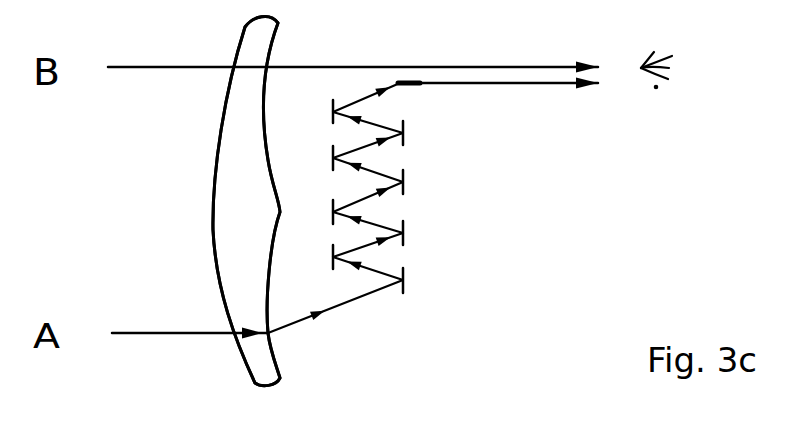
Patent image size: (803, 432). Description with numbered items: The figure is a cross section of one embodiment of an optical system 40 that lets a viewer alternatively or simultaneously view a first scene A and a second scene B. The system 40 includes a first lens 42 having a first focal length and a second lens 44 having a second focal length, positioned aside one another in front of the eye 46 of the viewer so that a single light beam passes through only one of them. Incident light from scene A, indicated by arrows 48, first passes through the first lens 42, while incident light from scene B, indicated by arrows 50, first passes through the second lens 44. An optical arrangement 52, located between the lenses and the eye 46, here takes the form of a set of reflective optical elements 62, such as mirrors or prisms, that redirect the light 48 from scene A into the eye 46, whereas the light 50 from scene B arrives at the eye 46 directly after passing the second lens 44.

The optical system 40 is at (545, 285).
The first lens 42 is at (263, 366).
The second lens 44 is at (253, 47).
The eye of the viewer 46 is at (667, 80).
The arrows indicating incident light from the first scene A 48 is at (478, 83).
The arrows indicating incident light from the second scene B 50 is at (478, 67).
The optical arrangement 52 is at (408, 372).
The reflective optical elements 62 is at (413, 82).